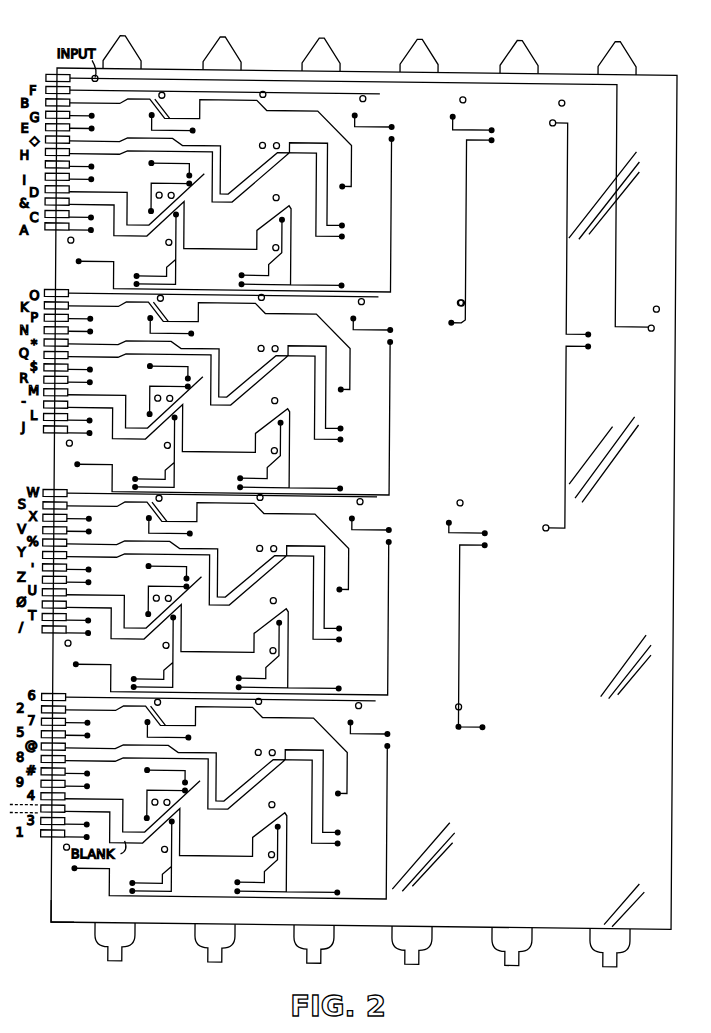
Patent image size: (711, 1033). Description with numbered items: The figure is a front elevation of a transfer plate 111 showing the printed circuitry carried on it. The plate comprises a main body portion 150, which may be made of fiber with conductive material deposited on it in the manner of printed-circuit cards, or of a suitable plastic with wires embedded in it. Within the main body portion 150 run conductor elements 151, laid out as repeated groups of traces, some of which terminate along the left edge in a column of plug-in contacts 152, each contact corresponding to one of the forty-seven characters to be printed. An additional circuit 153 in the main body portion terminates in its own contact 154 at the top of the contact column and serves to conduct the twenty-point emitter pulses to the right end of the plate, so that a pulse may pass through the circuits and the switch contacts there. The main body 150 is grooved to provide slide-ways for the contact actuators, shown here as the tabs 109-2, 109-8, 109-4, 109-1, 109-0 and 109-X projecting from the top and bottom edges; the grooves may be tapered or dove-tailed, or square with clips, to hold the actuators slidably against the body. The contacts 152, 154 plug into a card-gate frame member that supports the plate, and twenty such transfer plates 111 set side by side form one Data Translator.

The transfer plate 111 is at (55, 937).
The main body portion 150 is at (290, 68).
The conductor elements 151 is at (236, 246).
The plug-in contacts 152 is at (52, 292).
The additional circuit 153 is at (587, 82).
The contact 154 is at (56, 68).
The contact actuator 109-2 is at (132, 43).
The contact actuator 109-8 is at (232, 43).
The contact actuator 109-4 is at (331, 43).
The contact actuator 109-1 is at (401, 59).
The contact actuator 109-0 is at (530, 48).
The contact actuator 109-X is at (629, 48).